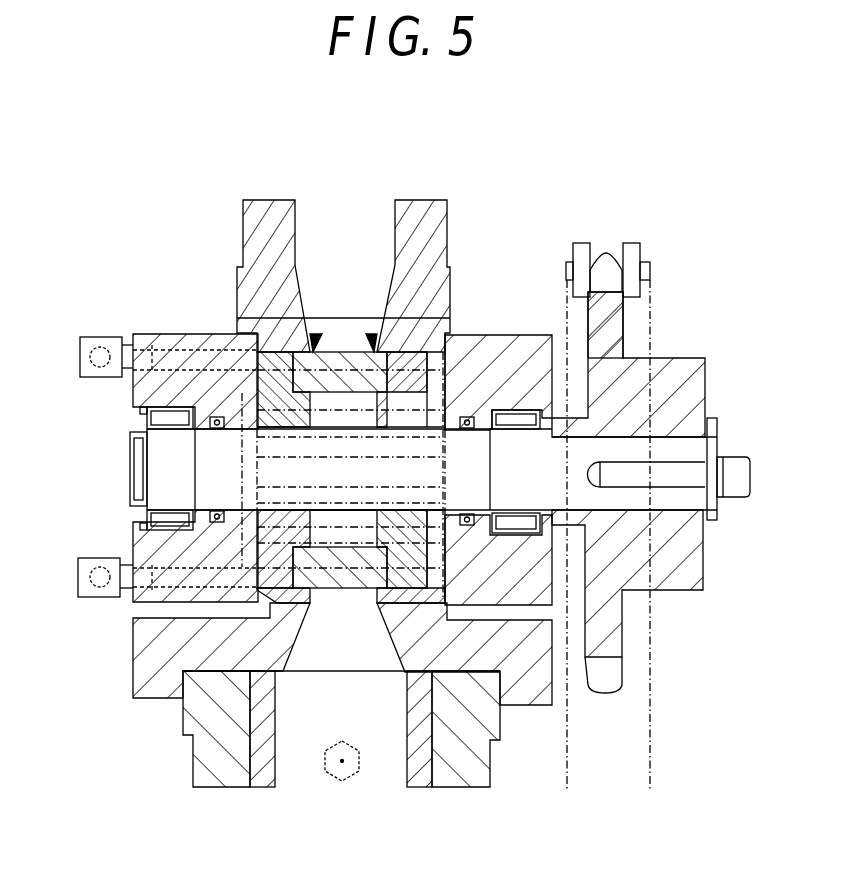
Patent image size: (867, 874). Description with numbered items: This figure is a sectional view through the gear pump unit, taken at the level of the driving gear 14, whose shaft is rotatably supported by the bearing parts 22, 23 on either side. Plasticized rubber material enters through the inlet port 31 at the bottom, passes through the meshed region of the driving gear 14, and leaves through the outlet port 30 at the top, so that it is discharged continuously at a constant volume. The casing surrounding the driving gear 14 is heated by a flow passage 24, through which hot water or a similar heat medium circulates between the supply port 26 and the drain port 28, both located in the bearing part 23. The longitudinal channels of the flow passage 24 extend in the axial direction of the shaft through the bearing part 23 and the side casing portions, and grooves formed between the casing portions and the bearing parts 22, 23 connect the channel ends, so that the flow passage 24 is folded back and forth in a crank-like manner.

The driving gear 14 is at (335, 472).
The bearing part 22 is at (493, 360).
The bearing part 23 is at (157, 547).
The flow passage 24 is at (187, 357).
The supply port 26 is at (100, 355).
The drain port 28 is at (98, 578).
The outlet port 30 is at (330, 333).
The inlet port 31 is at (340, 598).